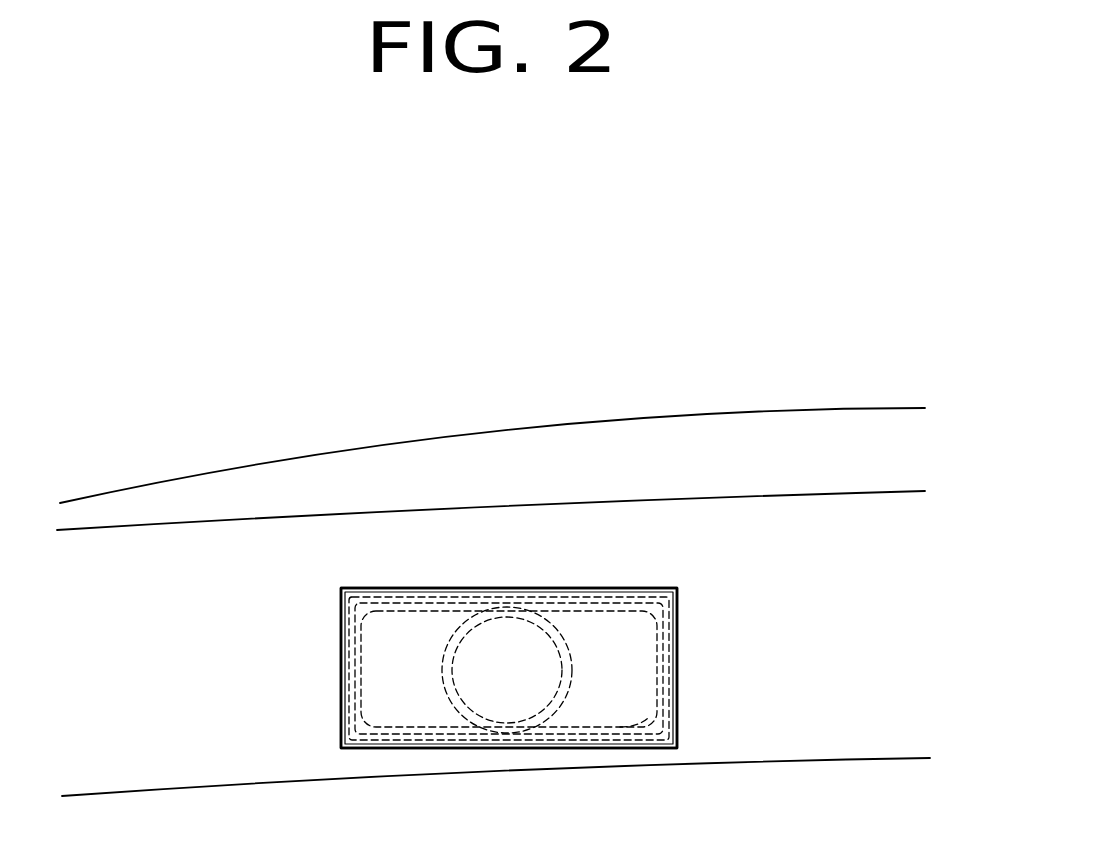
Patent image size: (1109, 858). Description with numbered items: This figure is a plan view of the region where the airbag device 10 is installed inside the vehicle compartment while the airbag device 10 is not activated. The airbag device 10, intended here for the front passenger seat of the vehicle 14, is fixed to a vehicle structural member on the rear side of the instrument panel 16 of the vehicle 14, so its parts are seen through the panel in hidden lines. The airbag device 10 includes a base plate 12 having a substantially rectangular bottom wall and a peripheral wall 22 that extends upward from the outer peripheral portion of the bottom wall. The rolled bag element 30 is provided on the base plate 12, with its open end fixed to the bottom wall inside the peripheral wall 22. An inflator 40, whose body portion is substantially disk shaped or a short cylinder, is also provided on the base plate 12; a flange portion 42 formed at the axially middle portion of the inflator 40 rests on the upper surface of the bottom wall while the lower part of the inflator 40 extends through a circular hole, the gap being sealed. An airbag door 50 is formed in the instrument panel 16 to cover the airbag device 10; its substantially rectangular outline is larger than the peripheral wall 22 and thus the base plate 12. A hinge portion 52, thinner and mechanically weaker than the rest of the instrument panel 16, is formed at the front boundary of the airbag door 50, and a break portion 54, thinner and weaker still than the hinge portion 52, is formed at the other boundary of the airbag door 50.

The airbag device 10 is at (633, 643).
The base plate 12 is at (387, 596).
The vehicle 14 is at (588, 404).
The instrument panel 16 is at (200, 760).
The peripheral wall 22 is at (347, 657).
The bag element 30 is at (598, 613).
The inflator 40 is at (500, 630).
The flange portion 42 is at (452, 649).
The airbag door 50 is at (607, 716).
The hinge portion 52 is at (438, 590).
The break portion 54 is at (342, 720).